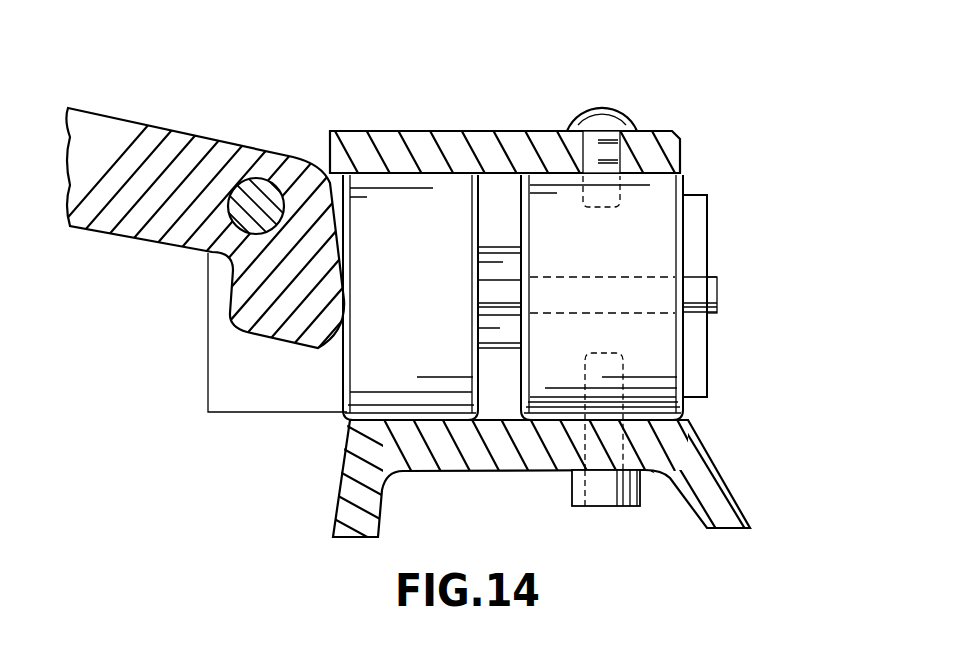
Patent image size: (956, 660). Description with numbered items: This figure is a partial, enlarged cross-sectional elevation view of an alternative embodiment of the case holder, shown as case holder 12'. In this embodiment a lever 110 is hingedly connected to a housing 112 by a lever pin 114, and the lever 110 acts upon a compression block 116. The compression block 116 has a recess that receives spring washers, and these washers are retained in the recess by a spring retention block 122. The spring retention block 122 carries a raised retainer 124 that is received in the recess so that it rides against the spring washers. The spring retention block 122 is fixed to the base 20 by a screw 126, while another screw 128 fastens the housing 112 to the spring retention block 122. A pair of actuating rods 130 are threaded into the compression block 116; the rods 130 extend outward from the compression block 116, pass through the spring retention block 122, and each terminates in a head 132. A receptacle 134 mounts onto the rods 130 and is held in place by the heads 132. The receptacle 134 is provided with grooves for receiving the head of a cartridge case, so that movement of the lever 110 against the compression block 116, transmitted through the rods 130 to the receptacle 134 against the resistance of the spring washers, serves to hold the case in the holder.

The case holder 12' is at (192, 528).
The base 20 is at (345, 462).
The lever 110 is at (147, 124).
The housing 112 is at (465, 131).
The lever pin 114 is at (287, 182).
The compression block 116 is at (393, 220).
The spring retention block 122 is at (650, 353).
The raised retainer 124 is at (521, 237).
The screw 126 is at (602, 506).
The screw 128 is at (603, 108).
The actuating rods 130 is at (492, 315).
The head 132 is at (718, 297).
The receptacle 134 is at (708, 218).